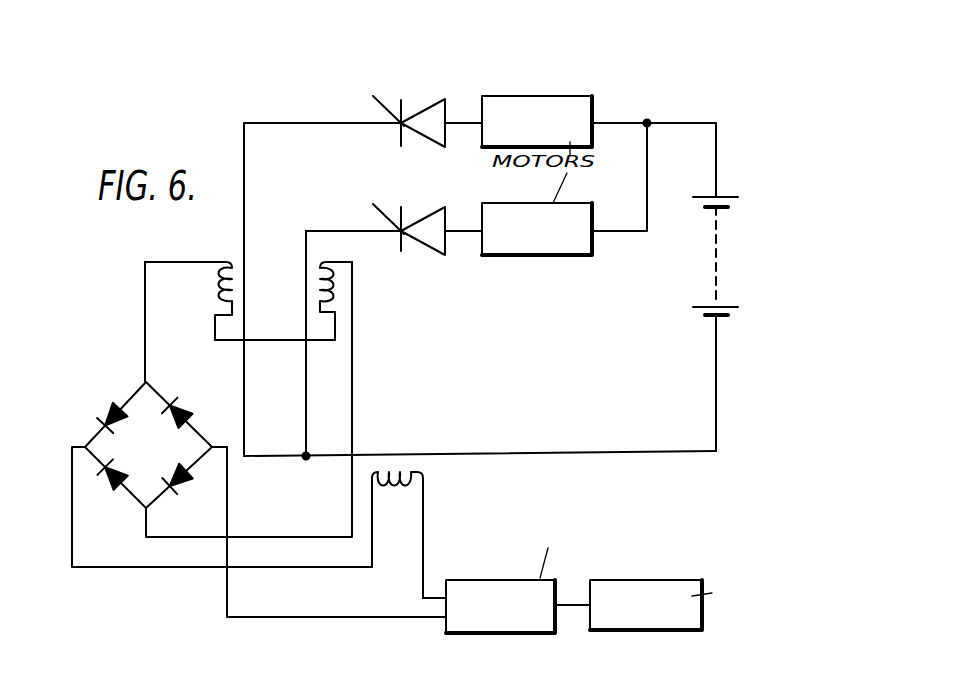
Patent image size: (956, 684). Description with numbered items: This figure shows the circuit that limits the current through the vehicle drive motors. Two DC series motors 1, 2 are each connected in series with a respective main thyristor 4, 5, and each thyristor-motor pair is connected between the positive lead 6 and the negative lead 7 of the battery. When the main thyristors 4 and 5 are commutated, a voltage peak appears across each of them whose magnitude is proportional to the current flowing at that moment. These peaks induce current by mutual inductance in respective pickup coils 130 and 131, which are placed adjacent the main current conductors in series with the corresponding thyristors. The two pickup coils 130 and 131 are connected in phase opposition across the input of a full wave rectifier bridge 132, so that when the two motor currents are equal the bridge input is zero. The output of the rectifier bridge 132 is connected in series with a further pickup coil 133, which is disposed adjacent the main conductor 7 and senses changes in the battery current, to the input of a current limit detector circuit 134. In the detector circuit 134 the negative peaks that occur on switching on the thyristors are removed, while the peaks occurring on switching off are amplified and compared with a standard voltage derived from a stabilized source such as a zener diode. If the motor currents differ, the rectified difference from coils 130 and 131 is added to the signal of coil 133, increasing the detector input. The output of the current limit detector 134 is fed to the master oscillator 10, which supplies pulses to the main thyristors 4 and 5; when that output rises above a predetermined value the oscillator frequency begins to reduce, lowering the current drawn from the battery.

The DC series motor 1 is at (591, 114).
The DC series motor 2 is at (537, 203).
The main thyristor 4 is at (395, 138).
The main thyristor 5 is at (426, 249).
The positive lead 6 is at (716, 155).
The negative lead 7 is at (716, 350).
The master oscillator 10 is at (663, 585).
The pickup coil 130 is at (219, 281).
The pickup coil 131 is at (338, 290).
The full wave rectifier bridge 132 is at (160, 455).
The pickup coil 133 is at (405, 492).
The current limit detector circuit 134 is at (505, 590).